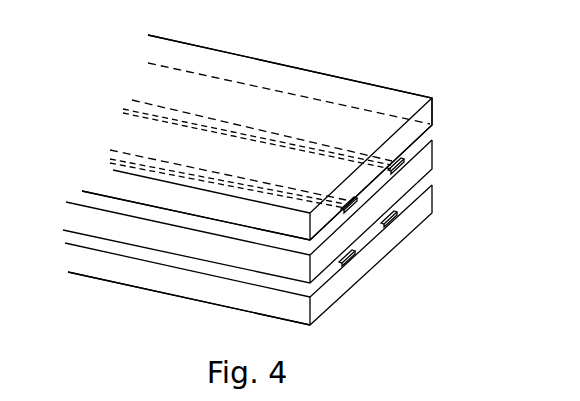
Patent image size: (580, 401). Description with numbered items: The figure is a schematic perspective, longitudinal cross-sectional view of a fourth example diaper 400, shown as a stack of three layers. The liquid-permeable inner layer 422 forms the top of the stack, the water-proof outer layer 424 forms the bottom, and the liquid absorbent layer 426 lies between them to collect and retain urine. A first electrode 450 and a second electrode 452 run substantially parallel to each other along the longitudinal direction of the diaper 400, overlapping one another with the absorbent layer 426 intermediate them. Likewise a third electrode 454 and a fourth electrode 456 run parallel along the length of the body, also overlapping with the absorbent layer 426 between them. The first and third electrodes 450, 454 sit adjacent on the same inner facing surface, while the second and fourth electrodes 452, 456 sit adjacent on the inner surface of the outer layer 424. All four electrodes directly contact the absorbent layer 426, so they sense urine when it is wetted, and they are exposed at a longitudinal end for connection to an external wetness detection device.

The diaper 400 is at (429, 55).
The inner layer 422 is at (428, 118).
The outer layer 424 is at (248, 255).
The absorbent layer 426 is at (247, 211).
The first electrode 450 is at (350, 208).
The second electrode 452 is at (347, 262).
The third electrode 454 is at (397, 169).
The fourth electrode 456 is at (395, 221).